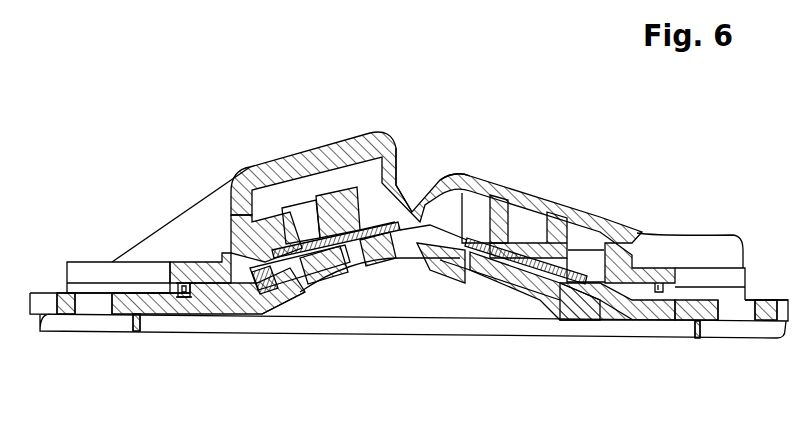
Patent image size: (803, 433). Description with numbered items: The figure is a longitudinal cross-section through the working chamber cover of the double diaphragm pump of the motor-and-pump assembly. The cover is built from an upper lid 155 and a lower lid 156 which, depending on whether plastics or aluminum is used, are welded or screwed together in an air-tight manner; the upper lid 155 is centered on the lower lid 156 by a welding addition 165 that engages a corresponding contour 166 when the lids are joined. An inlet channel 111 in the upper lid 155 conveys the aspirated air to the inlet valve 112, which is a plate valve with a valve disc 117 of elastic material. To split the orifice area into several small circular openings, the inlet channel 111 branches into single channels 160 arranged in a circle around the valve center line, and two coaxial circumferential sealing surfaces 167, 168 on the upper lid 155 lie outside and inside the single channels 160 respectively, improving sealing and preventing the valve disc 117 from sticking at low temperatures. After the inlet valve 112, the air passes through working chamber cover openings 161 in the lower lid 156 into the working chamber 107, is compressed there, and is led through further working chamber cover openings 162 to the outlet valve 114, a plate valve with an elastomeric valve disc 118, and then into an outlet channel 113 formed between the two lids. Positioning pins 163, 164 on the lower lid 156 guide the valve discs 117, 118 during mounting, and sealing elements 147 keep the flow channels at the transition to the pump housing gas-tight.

The working chamber 107 is at (418, 285).
The inlet channel 111 is at (340, 170).
The inlet valve 112 is at (366, 198).
The outlet channel 113 is at (475, 215).
The outlet valve 114 is at (585, 242).
The valve disc 117 is at (403, 160).
The valve disc 118 is at (483, 253).
The sealing element 147 is at (268, 283).
The upper lid 155 is at (497, 190).
The lower lid 156 is at (600, 290).
The single channels 160 is at (283, 222).
The working chamber cover openings 161 is at (299, 283).
The working chamber cover openings 162 is at (560, 278).
The positioning pin 163 is at (345, 245).
The positioning pin 164 is at (513, 258).
The welding addition 165 is at (180, 287).
The contour 166 is at (180, 298).
The sealing surface 167 is at (276, 222).
The sealing surface 168 is at (297, 225).